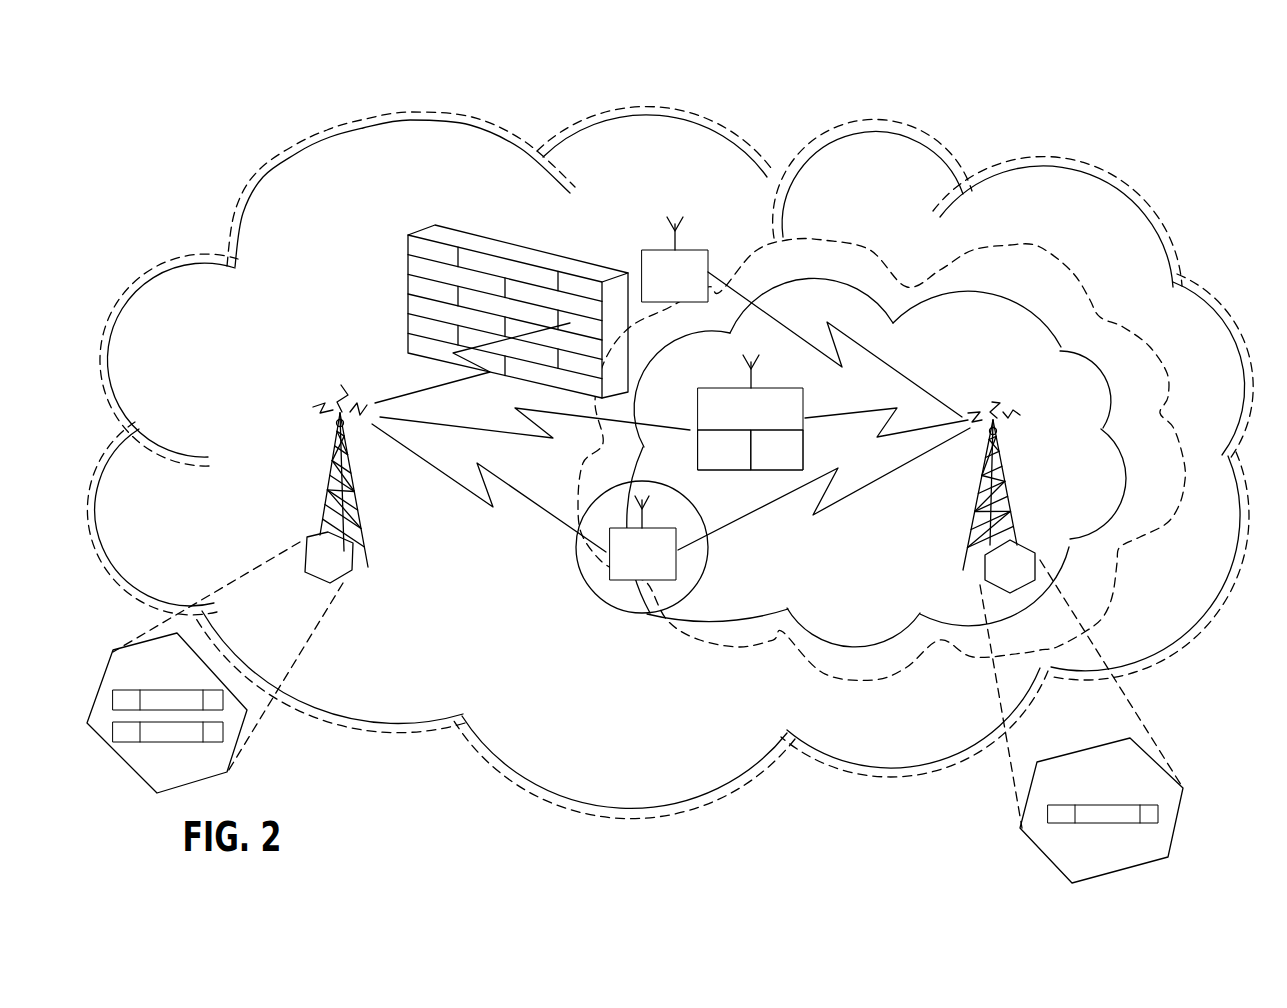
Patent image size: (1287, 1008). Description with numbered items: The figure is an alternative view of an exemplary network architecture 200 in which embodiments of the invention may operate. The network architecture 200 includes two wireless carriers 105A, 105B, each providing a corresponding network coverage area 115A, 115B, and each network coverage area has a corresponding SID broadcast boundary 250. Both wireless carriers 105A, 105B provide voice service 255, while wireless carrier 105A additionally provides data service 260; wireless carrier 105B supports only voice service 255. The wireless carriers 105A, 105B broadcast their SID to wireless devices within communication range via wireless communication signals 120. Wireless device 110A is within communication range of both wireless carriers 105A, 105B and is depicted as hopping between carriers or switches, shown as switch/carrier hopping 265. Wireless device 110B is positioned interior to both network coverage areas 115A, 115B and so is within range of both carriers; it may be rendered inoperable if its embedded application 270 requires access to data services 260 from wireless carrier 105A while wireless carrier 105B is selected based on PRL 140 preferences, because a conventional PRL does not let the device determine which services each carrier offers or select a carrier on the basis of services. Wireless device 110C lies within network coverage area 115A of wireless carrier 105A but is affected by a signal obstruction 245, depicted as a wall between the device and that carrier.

The network architecture 200 is at (512, 90).
The signal obstruction 245 is at (408, 255).
The SID broadcast boundary 250 is at (855, 135).
The network coverage area 115A is at (1027, 167).
The network coverage area 115B is at (1030, 310).
The wireless carrier 105A is at (284, 453).
The wireless carrier 105B is at (1007, 395).
The wireless device 110A is at (622, 565).
The wireless device 110B is at (727, 418).
The wireless device 110C is at (657, 287).
The wireless communication signals 120 is at (423, 413).
The PRL 140 is at (712, 458).
The embedded application 270 is at (762, 458).
The voice service 255 is at (223, 700).
The data service 260 is at (223, 733).
The switch/carrier hopping 265 is at (640, 614).